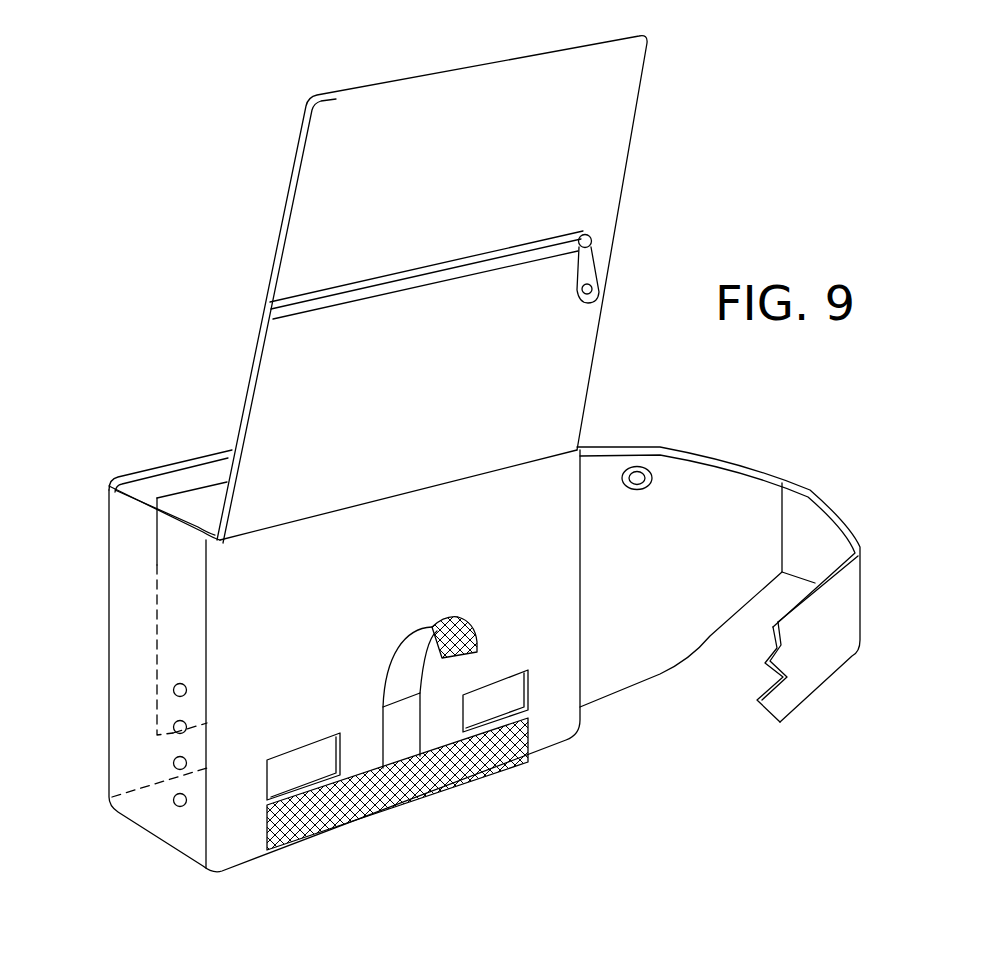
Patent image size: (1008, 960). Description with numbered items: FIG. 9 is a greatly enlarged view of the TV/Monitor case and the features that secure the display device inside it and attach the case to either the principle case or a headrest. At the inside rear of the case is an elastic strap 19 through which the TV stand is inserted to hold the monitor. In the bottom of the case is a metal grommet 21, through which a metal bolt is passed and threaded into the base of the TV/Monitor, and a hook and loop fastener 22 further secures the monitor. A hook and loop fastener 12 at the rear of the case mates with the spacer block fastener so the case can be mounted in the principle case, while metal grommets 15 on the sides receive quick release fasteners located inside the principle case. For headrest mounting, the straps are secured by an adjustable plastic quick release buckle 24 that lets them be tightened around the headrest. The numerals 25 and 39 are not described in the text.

The hook and loop fastener 12 is at (403, 803).
The metal grommet 15 is at (643, 468).
The elastic strap 19 is at (317, 193).
The metal grommet 21 is at (457, 658).
The hook and loop fastener 22 is at (361, 755).
The adjustable plastic quick release buckle 24 is at (618, 237).
The curved clip panel 25 is at (780, 722).
The side panel with holes 39 is at (177, 823).